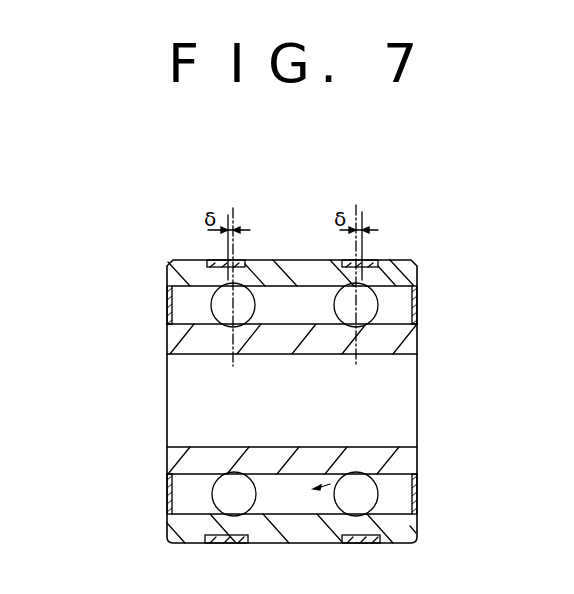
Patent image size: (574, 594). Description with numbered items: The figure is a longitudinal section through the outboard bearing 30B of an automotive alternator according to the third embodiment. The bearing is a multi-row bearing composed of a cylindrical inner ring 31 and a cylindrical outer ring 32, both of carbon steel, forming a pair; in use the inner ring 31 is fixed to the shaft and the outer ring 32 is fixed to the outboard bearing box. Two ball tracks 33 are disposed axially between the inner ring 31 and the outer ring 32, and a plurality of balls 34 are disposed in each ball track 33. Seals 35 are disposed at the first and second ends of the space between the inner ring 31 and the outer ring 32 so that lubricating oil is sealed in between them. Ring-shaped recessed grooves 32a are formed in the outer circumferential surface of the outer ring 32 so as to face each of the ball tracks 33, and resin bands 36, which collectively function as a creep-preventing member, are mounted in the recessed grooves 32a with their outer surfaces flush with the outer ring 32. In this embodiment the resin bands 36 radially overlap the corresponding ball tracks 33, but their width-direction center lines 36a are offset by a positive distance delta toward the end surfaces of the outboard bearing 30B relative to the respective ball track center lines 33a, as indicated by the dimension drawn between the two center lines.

The outboard bearing 30B is at (122, 207).
The inner ring 31 is at (174, 338).
The outer ring 32 is at (172, 274).
The recessed groove 32a is at (368, 268).
The ball track 33 is at (247, 316).
The ball track center line 33a is at (236, 217).
The ball 34 is at (343, 312).
The seal 35 is at (170, 301).
The resin band 36 is at (236, 262).
The width-direction center line 36a is at (224, 254).